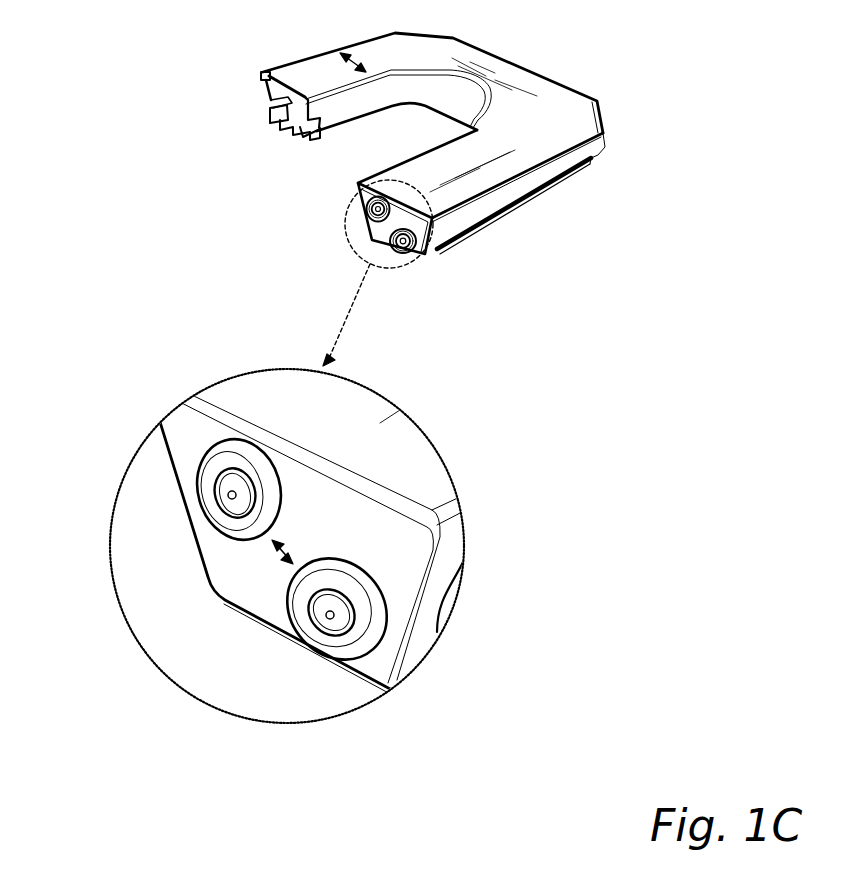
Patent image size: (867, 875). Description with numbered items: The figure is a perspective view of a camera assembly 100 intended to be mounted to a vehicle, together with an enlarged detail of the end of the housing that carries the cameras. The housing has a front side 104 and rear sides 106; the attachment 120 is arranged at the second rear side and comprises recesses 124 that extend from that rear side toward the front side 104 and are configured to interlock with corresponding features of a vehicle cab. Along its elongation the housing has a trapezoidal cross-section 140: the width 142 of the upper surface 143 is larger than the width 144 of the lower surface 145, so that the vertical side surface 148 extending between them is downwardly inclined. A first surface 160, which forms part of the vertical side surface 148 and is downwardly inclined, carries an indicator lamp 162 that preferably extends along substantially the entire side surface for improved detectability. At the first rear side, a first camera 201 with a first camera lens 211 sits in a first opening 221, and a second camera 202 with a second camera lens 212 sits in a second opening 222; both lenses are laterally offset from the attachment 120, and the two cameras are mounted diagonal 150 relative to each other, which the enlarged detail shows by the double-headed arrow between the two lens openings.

The camera assembly 100 is at (582, 44).
The front side 104 is at (500, 56).
The rear side 106 is at (302, 138).
The attachment 120 is at (262, 116).
The recess 124 is at (270, 101).
The trapezoidal cross-section 140 is at (288, 133).
The width of upper surface 142 is at (352, 52).
The upper surface 143 is at (415, 50).
The width of lower surface 144 is at (274, 131).
The lower surface 145 is at (401, 105).
The vertical side surface 148 is at (366, 98).
The diagonal 150 is at (290, 553).
The first surface 160 is at (510, 187).
The indicator lamp 162 is at (588, 164).
The first camera 201 is at (366, 598).
The second camera 202 is at (242, 540).
The first camera lens 211 is at (330, 617).
The second camera lens 212 is at (232, 496).
The first opening 221 is at (322, 590).
The second opening 222 is at (231, 450).